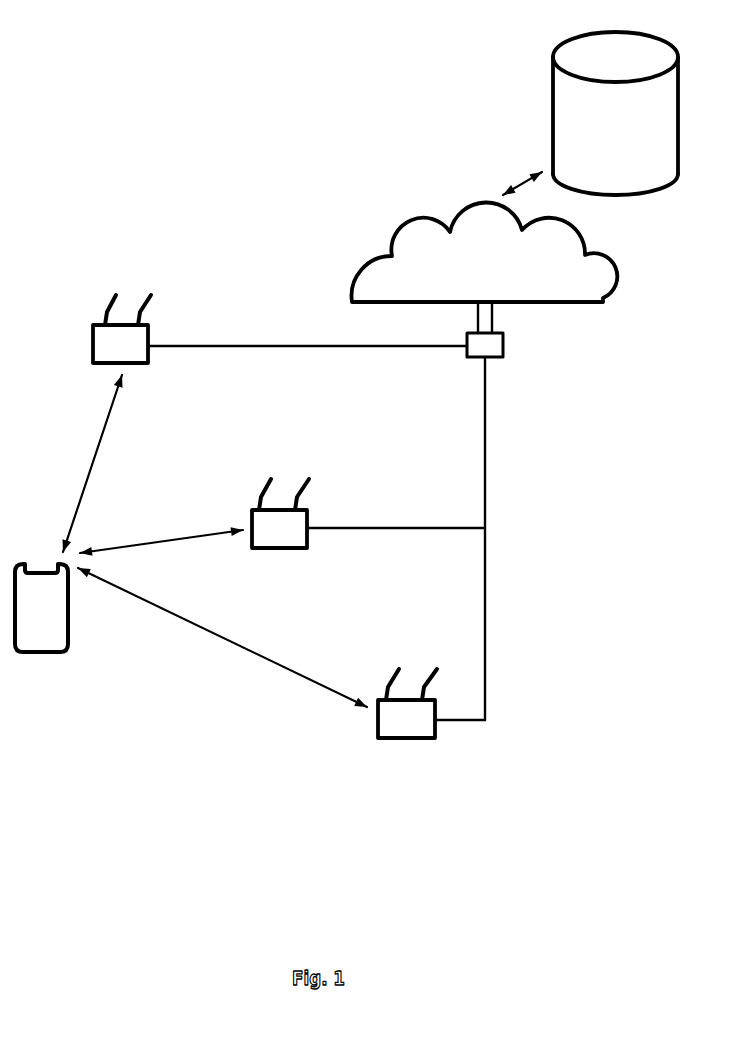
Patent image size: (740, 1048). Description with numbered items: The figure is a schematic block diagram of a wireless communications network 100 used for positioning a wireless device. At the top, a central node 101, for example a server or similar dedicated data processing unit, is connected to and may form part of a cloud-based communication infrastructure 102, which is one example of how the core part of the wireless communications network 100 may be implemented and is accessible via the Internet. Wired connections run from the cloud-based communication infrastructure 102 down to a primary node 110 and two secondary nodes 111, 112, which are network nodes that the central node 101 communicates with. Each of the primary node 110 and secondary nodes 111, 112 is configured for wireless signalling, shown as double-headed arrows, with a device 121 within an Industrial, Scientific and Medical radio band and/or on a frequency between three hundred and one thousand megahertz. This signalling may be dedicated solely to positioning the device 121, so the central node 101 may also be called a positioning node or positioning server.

The wireless communications network 100 is at (160, 142).
The central node 101 is at (615, 196).
The cloud-based communication infrastructure 102 is at (603, 300).
The primary node 110 is at (307, 514).
The secondary node 111 is at (148, 336).
The secondary node 112 is at (402, 738).
The device 121 is at (50, 653).